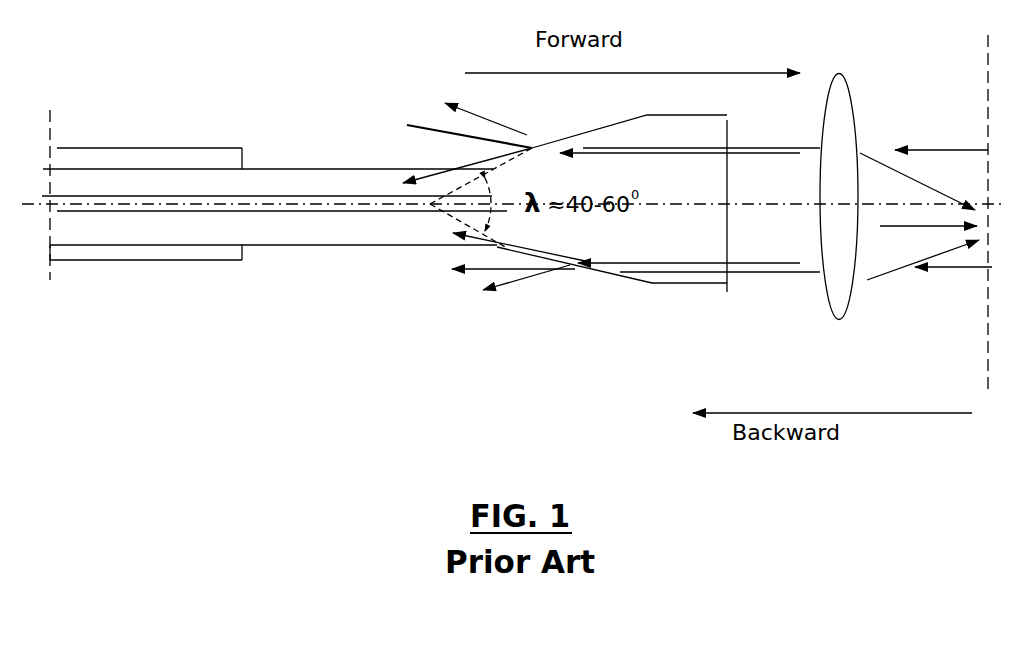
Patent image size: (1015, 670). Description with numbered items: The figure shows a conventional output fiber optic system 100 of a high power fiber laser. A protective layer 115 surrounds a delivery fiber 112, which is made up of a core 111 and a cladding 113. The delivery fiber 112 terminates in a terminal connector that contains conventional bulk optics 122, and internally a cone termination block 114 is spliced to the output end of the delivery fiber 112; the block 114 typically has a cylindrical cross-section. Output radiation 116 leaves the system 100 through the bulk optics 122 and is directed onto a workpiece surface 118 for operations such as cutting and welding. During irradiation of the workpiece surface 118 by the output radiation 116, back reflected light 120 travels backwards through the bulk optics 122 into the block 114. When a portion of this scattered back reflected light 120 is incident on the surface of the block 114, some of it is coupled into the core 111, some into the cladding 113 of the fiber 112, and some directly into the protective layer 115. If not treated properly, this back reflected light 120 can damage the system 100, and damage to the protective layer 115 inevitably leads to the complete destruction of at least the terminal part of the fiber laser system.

The output fiber optic system 100 is at (428, 310).
The core 111 is at (397, 212).
The delivery fiber 112 is at (298, 252).
The cladding 113 is at (265, 182).
The cone termination block 114 is at (717, 242).
The protective layer 115 is at (123, 158).
The output radiation 116 is at (912, 182).
The workpiece surface 118 is at (978, 342).
The back reflected light 120 is at (797, 157).
The bulk optics 122 is at (848, 253).